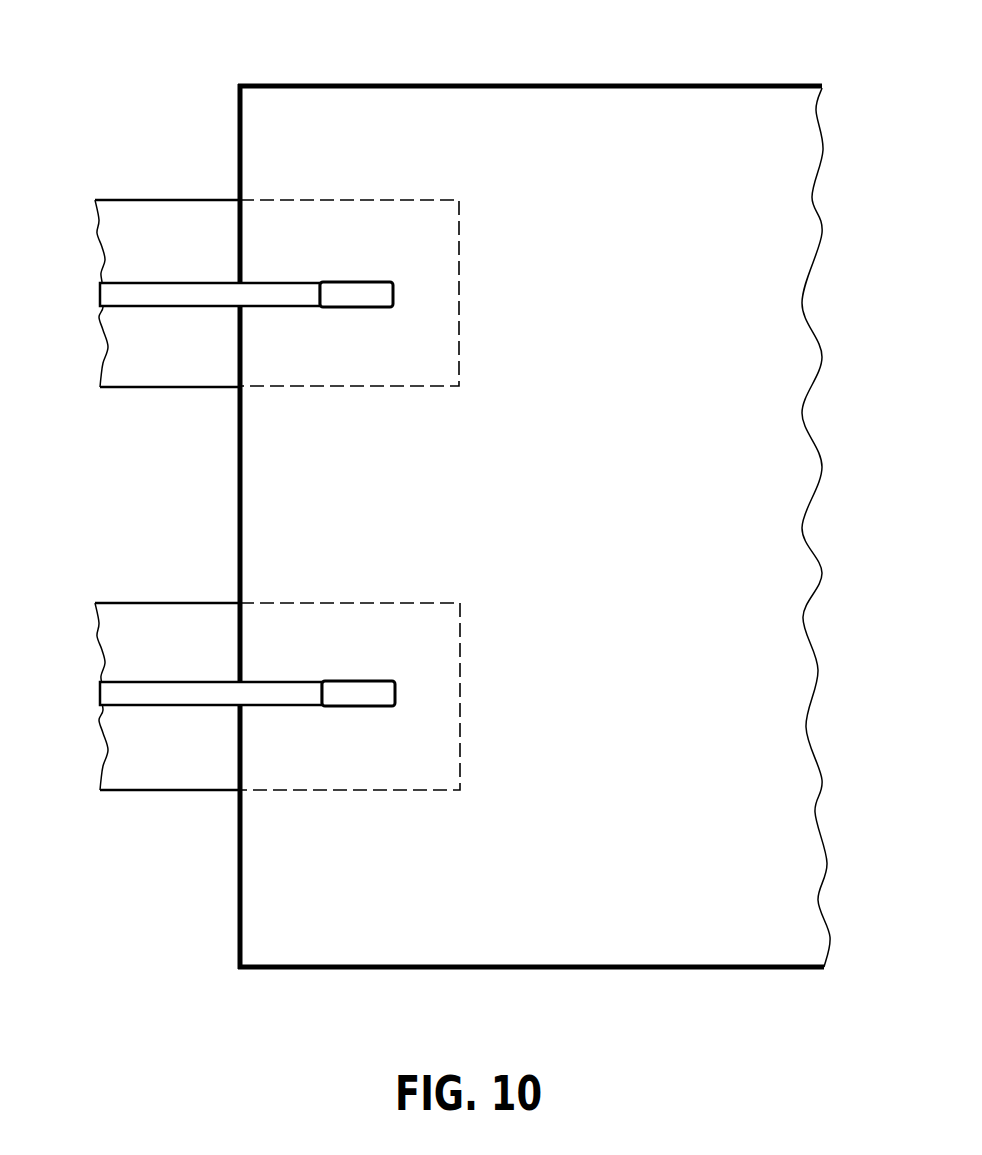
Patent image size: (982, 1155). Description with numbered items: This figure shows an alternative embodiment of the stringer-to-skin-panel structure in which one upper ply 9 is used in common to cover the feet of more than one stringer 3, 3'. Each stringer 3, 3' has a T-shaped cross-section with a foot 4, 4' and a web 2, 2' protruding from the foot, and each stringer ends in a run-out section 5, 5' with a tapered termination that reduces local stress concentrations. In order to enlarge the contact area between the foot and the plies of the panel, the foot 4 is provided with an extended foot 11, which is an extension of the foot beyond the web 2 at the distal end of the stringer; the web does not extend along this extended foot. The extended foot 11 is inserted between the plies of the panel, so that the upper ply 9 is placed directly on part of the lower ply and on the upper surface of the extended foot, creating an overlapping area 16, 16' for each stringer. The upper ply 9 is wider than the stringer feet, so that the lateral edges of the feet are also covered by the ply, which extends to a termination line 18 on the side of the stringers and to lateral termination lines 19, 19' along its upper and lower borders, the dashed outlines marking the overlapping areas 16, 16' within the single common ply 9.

The web 2 is at (247, 700).
The web 2' is at (235, 286).
The stringer 3 is at (179, 732).
The stringer 3' is at (173, 332).
The foot 4 is at (161, 741).
The foot 4' is at (167, 332).
The run-out section 5 is at (390, 780).
The run-out section 5' is at (381, 374).
The upper ply 9 is at (456, 528).
The extended foot 11 is at (425, 207).
The overlapping area 16 is at (350, 827).
The overlapping area 16' is at (372, 195).
The termination line 18 is at (240, 882).
The lateral termination line 19 is at (530, 45).
The lateral termination line 19' is at (531, 1009).